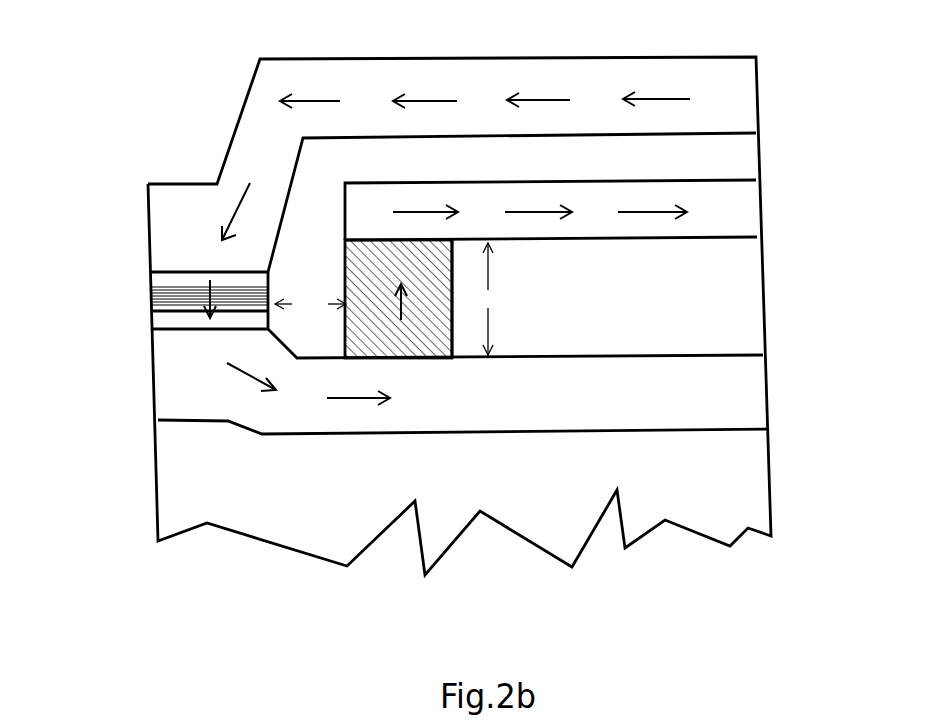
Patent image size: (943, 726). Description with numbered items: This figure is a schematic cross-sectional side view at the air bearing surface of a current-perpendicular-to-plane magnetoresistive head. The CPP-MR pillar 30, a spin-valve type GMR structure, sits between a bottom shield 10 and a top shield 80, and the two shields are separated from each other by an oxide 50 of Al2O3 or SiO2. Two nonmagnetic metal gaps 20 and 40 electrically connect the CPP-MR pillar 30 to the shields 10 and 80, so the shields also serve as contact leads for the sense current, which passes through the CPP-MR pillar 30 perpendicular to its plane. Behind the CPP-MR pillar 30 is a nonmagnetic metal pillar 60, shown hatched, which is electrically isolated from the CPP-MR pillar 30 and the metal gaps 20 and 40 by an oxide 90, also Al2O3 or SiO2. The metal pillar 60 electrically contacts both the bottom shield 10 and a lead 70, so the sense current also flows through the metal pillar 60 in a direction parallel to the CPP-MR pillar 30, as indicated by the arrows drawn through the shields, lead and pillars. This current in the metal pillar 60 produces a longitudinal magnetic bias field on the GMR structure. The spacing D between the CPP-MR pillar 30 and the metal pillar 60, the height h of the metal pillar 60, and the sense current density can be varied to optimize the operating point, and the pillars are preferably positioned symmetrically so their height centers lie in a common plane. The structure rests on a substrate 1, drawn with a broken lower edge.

The substrate 1 is at (707, 460).
The bottom shield 10 is at (708, 397).
The nonmagnetic metal gap 20 is at (176, 320).
The CPP-MR pillar 30 is at (152, 304).
The nonmagnetic metal gap 40 is at (172, 277).
The oxide 50 is at (713, 303).
The nonmagnetic metal pillar 60 is at (432, 313).
The electrical lead 70 is at (728, 212).
The top shield 80 is at (718, 73).
The oxide 90 is at (732, 155).